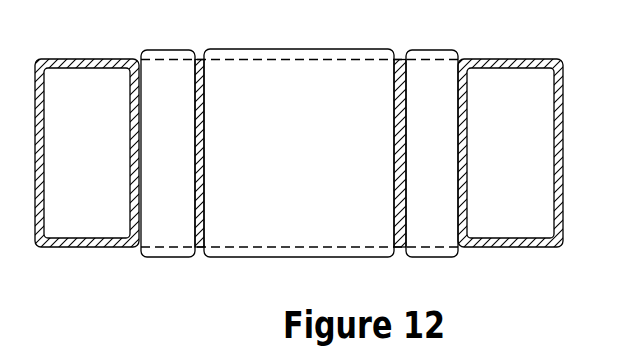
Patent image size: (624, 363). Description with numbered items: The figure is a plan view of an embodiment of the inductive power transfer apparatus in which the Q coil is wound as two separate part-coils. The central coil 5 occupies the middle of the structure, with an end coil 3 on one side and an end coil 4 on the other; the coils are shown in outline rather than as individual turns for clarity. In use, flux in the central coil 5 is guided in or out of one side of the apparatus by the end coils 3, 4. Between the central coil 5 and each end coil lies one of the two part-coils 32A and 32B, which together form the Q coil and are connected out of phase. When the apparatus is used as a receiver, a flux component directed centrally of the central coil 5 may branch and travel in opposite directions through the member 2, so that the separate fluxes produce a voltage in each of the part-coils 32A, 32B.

The member 2 is at (400, 62).
The end coil 3 is at (87, 153).
The end coil 4 is at (510, 153).
The central coil 5 is at (299, 153).
The part-coil 32A is at (163, 252).
The part-coil 32B is at (440, 252).